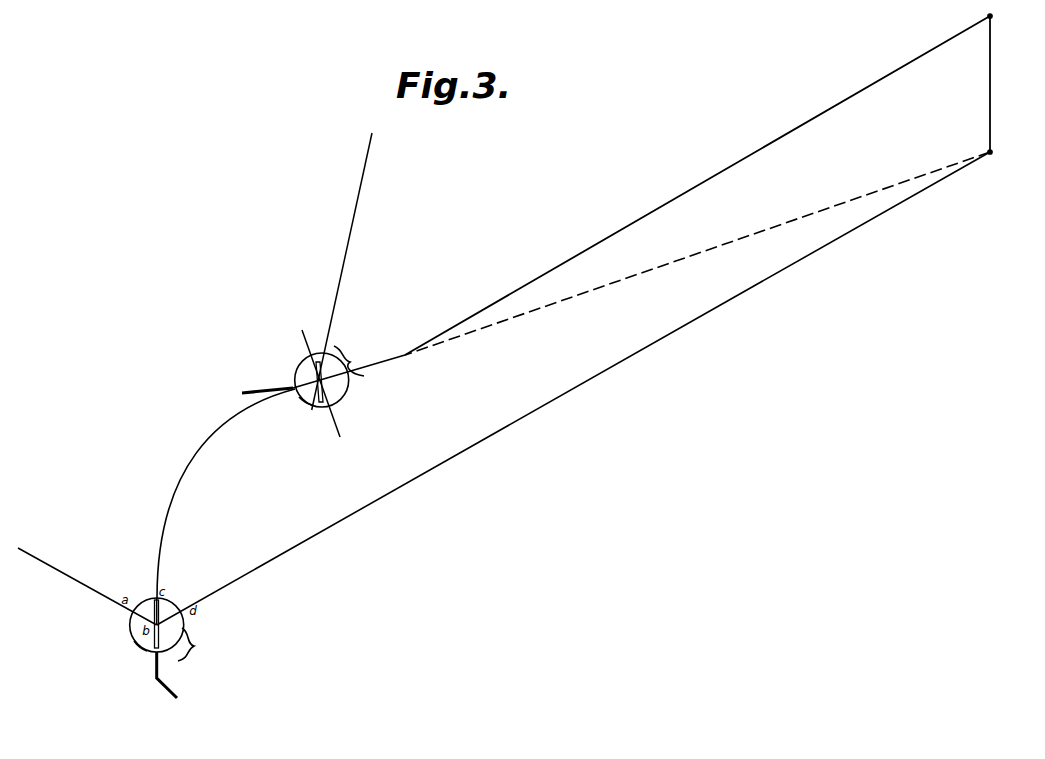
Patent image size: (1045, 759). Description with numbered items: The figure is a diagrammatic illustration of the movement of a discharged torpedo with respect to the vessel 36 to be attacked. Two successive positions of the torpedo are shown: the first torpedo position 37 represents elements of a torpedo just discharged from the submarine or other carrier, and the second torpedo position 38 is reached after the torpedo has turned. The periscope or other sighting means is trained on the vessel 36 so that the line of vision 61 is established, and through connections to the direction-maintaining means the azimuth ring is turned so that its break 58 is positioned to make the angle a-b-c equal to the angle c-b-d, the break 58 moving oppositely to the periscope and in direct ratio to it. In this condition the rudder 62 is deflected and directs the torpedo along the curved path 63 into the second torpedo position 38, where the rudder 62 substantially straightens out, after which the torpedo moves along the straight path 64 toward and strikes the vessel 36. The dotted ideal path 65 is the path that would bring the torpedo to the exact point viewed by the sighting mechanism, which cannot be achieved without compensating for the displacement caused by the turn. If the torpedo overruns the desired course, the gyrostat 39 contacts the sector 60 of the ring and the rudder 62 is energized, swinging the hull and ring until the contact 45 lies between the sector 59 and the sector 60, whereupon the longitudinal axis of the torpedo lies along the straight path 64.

The vessel 36 is at (1008, 84).
The first torpedo position 37 is at (195, 644).
The second torpedo position 38 is at (353, 351).
The gyrostat 39 is at (319, 403).
The contact 45 is at (310, 352).
The break 58 is at (327, 354).
The sector 59 is at (350, 387).
The sector 60 is at (301, 398).
The line of vision 61 is at (573, 388).
The rudder 62 is at (216, 545).
The curved path 63 is at (226, 493).
The straight path 64 is at (697, 185).
The ideal path 65 is at (697, 253).